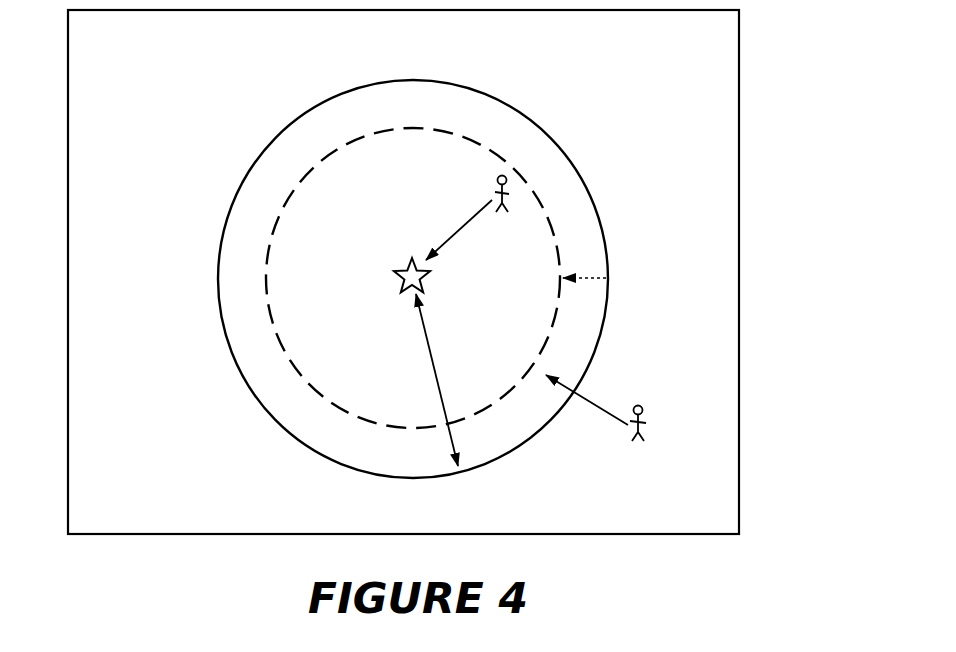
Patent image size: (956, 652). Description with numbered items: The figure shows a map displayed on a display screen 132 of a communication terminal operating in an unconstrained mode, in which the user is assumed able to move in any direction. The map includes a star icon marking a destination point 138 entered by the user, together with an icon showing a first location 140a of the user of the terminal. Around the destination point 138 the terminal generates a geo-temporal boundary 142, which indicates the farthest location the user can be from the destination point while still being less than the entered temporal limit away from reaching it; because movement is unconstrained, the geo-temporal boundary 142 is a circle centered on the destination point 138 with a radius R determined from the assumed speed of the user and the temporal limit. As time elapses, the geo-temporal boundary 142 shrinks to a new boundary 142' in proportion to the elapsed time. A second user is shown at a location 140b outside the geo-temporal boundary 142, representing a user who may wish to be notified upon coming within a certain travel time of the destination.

The display screen 132 is at (741, 125).
The geo-temporal boundary 142 is at (454, 279).
The new boundary 142' is at (436, 278).
The destination point 138 is at (398, 275).
The radius R is at (418, 339).
The first location 140a is at (507, 197).
The location 140b is at (644, 427).